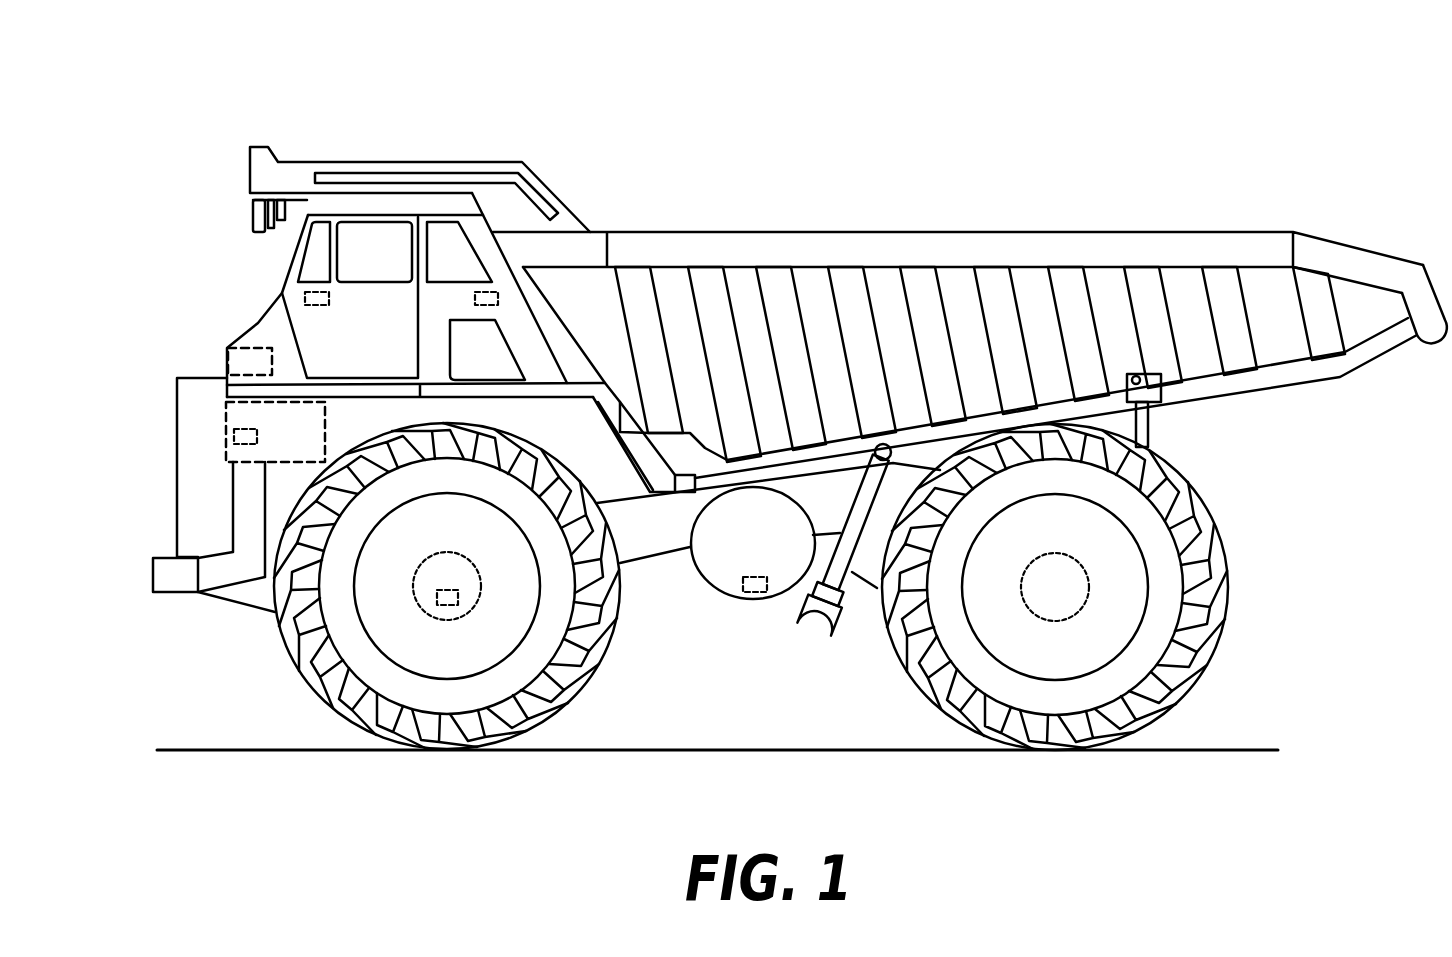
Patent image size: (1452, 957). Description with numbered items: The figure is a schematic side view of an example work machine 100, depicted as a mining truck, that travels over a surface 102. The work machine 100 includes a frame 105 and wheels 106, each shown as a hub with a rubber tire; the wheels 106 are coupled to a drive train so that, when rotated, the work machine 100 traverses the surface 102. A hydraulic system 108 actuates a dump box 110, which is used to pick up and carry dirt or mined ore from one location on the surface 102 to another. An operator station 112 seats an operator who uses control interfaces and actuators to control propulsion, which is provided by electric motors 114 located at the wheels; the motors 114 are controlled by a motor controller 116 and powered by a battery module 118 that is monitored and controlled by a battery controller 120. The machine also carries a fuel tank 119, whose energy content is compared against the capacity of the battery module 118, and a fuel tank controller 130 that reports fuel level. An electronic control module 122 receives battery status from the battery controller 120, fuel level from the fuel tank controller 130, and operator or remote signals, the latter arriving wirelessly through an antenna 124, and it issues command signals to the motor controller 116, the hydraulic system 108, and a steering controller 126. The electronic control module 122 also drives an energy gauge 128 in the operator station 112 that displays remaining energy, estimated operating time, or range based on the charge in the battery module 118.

The work machine 100 is at (1215, 118).
The surface 102 is at (200, 752).
The frame 105 is at (646, 543).
The wheels 106 is at (310, 664).
The hydraulic system 108 is at (853, 578).
The dump box 110 is at (1018, 240).
The operator station 112 is at (258, 277).
The motors 114 is at (423, 578).
The motor controller 116 is at (460, 603).
The battery module 118 is at (226, 423).
The fuel tank 119 is at (728, 586).
The battery controller 120 is at (257, 432).
The electronic control module 122 is at (227, 352).
The antenna 124 is at (311, 150).
The steering controller 126 is at (500, 297).
The energy gauge 128 is at (323, 318).
The fuel tank controller 130 is at (757, 593).